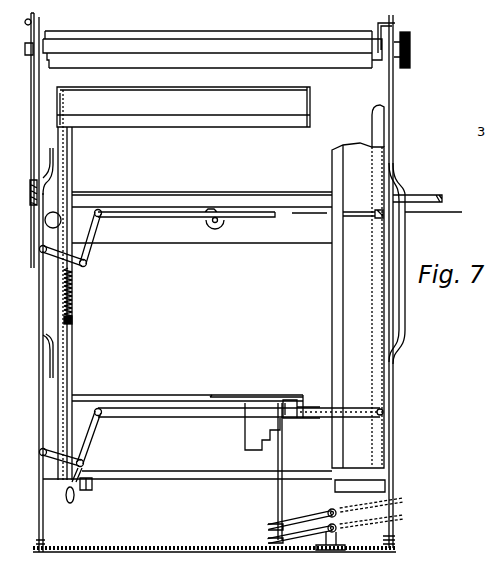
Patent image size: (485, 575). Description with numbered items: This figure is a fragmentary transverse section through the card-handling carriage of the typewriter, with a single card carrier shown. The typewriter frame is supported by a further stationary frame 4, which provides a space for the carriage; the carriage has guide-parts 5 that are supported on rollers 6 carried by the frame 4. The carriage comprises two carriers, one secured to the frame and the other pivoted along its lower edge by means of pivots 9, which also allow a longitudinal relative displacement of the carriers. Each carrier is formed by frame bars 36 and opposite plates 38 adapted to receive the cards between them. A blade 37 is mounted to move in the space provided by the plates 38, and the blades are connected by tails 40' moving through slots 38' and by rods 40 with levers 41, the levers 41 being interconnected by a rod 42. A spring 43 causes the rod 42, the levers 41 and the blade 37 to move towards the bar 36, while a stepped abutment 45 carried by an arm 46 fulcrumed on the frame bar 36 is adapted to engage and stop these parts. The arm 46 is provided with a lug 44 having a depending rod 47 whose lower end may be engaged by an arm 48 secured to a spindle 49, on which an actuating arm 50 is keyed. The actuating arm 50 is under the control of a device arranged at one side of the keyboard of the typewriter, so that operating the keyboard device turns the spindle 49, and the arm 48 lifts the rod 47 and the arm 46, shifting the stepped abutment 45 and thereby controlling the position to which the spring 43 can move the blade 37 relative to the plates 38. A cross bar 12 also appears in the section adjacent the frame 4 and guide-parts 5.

The stationary frame 4 is at (43, 437).
The guide-parts 5 is at (38, 222).
The rollers 6 is at (218, 226).
The pivots 9 is at (86, 490).
The cross bar 12 is at (379, 223).
The frame bars 36 is at (70, 367).
The blade 37 is at (380, 125).
The plates 38 is at (378, 317).
The slots 38' is at (337, 251).
The rods 40 is at (240, 323).
The tails 40' is at (411, 287).
The levers 41 is at (95, 232).
The rod 42 is at (45, 395).
The spring 43 is at (70, 292).
The lugs 44 is at (236, 397).
The stepped abutment 45 is at (291, 402).
The arm 46 is at (152, 398).
The depending rods 47 is at (283, 460).
The arms 48 is at (290, 520).
The spindles 49 is at (328, 510).
The actuating arms 50 is at (400, 506).